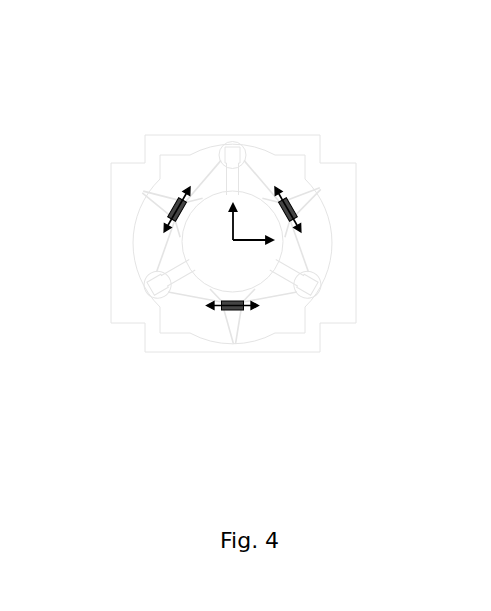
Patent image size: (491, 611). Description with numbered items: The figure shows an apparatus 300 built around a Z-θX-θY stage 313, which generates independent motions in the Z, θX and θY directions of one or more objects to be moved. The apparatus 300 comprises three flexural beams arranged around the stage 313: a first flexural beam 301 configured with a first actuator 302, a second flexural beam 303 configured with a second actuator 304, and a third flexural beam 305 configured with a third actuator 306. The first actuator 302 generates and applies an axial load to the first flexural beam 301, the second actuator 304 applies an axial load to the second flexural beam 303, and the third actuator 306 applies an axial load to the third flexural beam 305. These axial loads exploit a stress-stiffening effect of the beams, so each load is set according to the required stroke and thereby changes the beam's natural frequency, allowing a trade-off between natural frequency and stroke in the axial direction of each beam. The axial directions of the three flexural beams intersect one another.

The apparatus 300 is at (252, 40).
The first flexural beam 301 is at (178, 202).
The first actuator 302 is at (186, 207).
The second flexural beam 303 is at (222, 304).
The second actuator 304 is at (236, 311).
The third flexural beam 305 is at (285, 200).
The third actuator 306 is at (300, 212).
The Z-θX-θY stage 313 is at (217, 202).